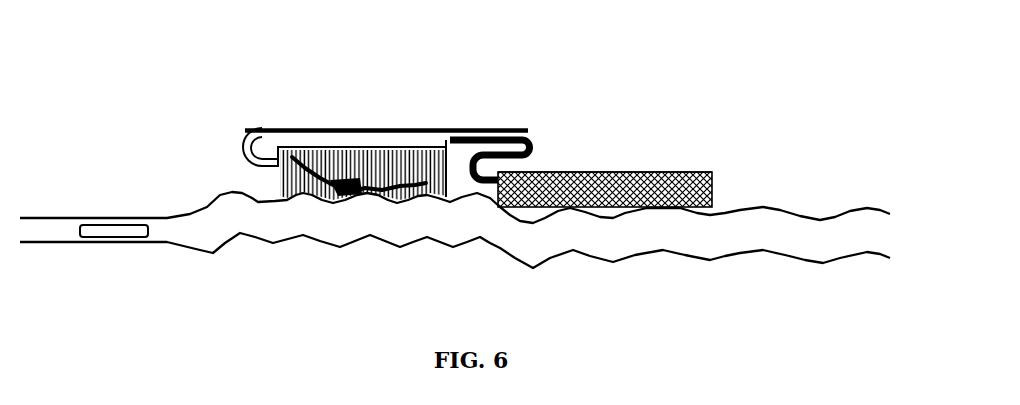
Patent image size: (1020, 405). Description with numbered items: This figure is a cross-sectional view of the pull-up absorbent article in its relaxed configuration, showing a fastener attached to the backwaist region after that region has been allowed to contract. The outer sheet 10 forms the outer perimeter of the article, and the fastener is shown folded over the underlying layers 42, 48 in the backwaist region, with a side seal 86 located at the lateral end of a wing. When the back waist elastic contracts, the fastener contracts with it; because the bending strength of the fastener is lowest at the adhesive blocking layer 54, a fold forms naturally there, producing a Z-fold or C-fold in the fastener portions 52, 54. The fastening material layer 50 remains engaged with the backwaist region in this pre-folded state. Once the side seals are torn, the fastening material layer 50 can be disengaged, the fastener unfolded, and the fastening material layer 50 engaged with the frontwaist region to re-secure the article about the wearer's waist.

The outer sheet 10 is at (856, 206).
The housing block 42 is at (587, 169).
The adhesive layer 48 is at (658, 171).
The fastening material layer 50 is at (363, 149).
The clip 52 is at (244, 127).
The adhesive blocking layer 54 is at (464, 130).
The side seal 86 is at (116, 229).